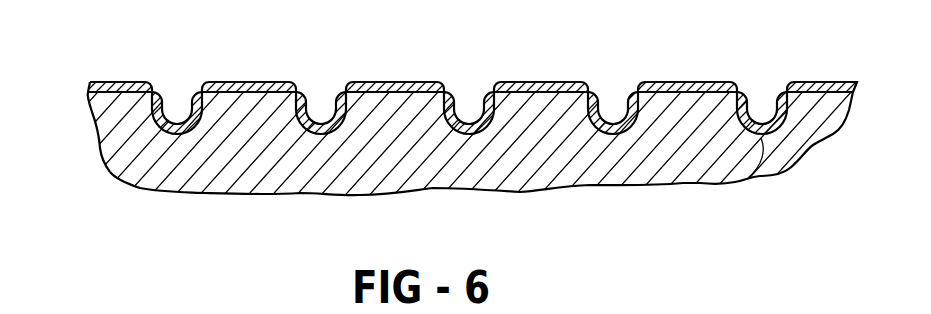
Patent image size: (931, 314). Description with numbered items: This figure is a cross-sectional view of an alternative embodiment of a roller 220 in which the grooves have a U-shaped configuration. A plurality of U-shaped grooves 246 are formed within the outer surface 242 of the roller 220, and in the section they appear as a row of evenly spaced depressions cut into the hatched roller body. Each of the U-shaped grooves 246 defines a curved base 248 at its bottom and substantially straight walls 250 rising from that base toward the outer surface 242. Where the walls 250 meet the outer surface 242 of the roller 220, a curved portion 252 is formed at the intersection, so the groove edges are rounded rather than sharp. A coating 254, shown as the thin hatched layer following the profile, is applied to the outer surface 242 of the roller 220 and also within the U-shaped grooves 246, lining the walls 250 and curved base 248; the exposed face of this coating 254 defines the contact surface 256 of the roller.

The roller 220 is at (357, 170).
The outer surface 242 is at (94, 138).
The U-shaped grooves 246 is at (173, 127).
The curved base 248 is at (313, 134).
The walls 250 is at (157, 113).
The curved portion 252 is at (207, 93).
The coating 254 is at (375, 85).
The contact surface 256 is at (523, 83).